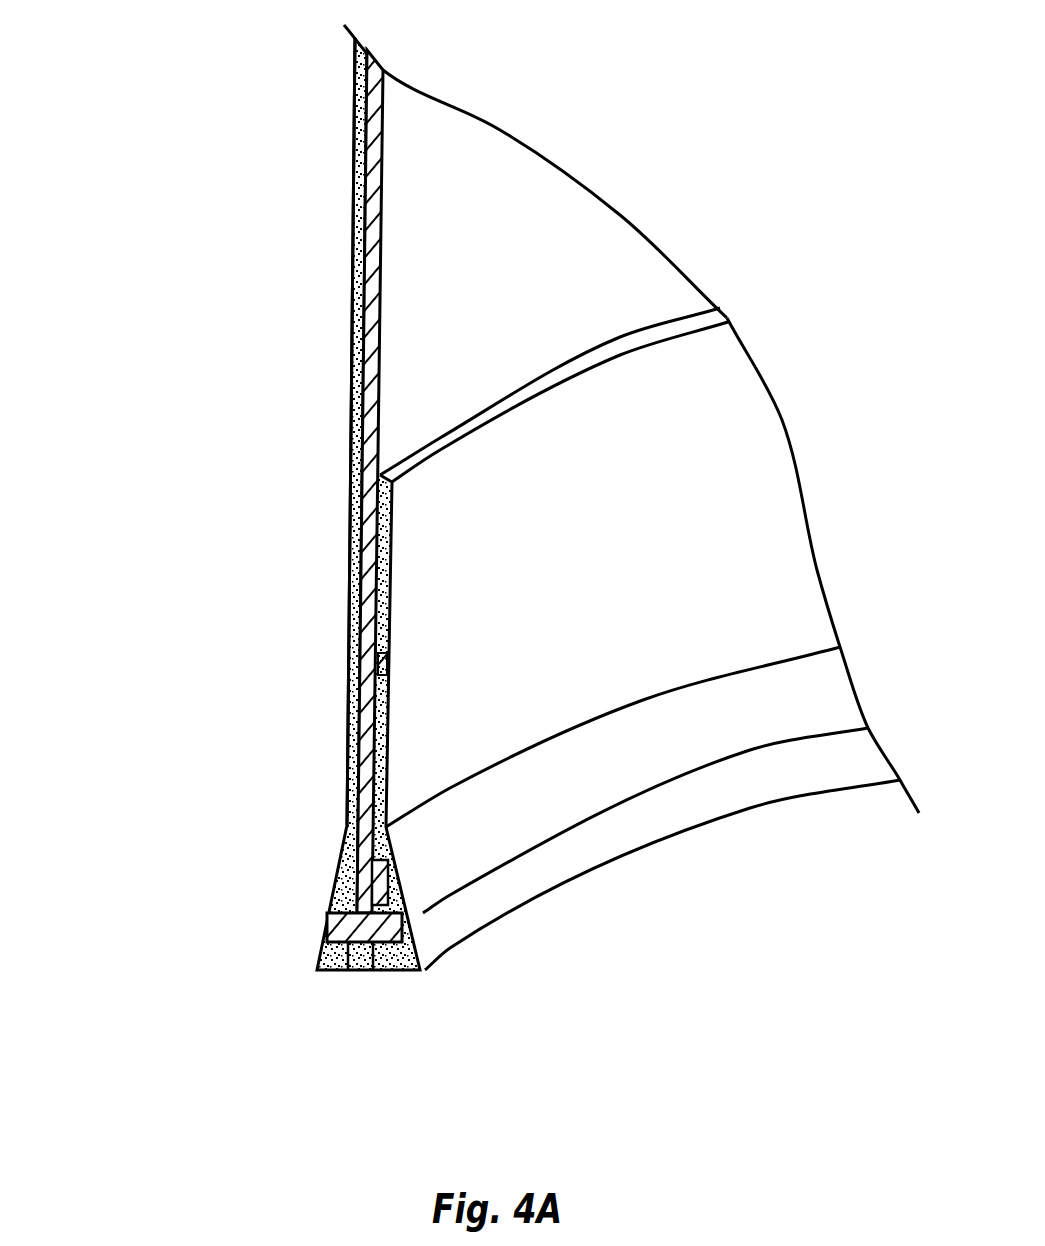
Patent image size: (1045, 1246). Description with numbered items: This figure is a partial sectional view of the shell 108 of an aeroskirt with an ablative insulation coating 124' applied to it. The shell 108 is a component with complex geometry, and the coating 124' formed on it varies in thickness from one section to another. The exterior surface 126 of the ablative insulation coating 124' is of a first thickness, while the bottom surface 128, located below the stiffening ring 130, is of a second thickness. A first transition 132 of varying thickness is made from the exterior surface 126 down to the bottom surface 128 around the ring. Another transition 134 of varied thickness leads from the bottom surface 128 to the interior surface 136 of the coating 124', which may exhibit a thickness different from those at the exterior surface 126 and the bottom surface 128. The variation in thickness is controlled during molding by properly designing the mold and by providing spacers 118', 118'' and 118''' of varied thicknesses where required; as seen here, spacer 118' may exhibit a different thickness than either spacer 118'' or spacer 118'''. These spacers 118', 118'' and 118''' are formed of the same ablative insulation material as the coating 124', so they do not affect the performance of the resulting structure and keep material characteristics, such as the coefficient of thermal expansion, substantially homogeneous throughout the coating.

The shell 108 is at (228, 628).
The spacer 118' is at (293, 481).
The spacer 118'' is at (345, 1024).
The spacer 118''' is at (302, 697).
The ablative insulation coating 124' is at (570, 335).
The exterior surface 126 is at (350, 287).
The bottom surface 128 is at (327, 973).
The stiffening ring 130 is at (392, 973).
The first transition 132 is at (323, 883).
The transition 134 is at (494, 808).
The interior surface 136 is at (692, 557).